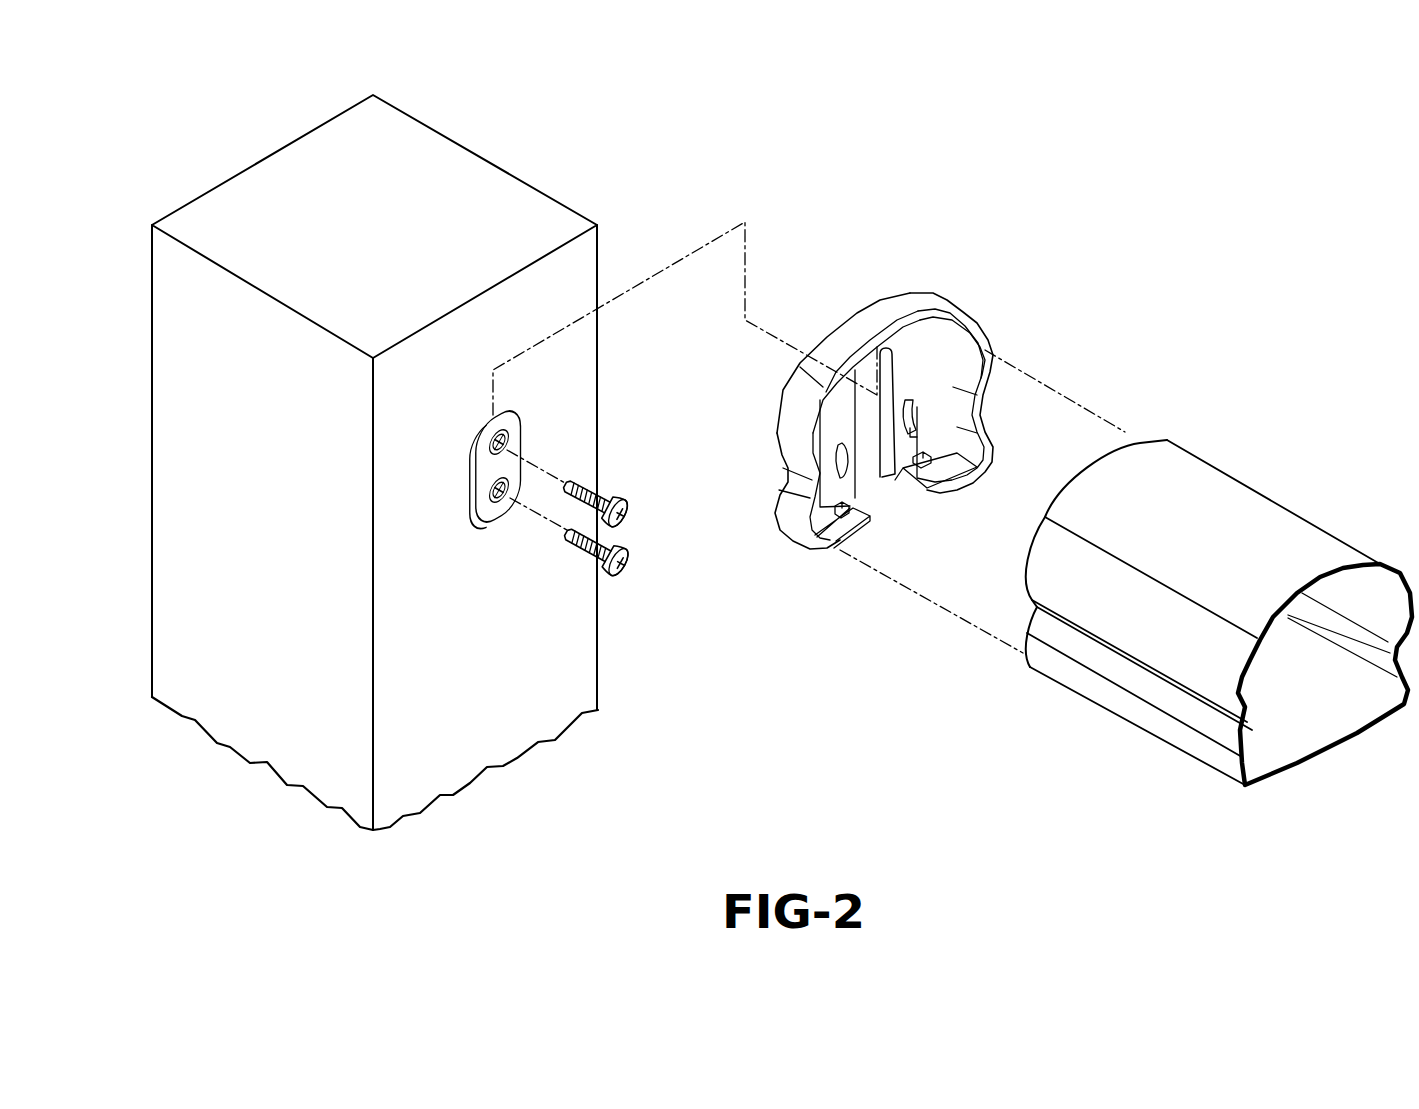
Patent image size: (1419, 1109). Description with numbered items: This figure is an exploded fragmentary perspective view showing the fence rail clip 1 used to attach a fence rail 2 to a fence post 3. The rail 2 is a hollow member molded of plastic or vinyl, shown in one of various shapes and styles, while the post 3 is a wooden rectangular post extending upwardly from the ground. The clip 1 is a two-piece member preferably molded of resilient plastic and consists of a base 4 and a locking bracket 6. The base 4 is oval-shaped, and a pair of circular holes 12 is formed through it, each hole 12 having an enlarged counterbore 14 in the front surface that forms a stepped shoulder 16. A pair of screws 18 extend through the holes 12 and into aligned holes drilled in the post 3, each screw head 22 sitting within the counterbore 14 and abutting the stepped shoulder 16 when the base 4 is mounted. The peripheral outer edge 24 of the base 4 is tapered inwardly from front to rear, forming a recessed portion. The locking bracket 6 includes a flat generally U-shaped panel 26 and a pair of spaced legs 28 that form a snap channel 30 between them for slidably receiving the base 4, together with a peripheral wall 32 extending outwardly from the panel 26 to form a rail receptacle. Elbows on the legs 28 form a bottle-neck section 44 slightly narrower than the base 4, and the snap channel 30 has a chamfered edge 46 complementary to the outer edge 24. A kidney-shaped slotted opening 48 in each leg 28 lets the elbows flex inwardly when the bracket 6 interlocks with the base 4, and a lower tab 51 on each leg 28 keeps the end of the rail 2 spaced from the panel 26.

The fence rail clip 1 is at (908, 413).
The fence rail 2 is at (1255, 517).
The fence post 3 is at (487, 177).
The base 4 is at (497, 492).
The locking bracket 6 is at (887, 413).
The circular holes 12 is at (499, 466).
The counterbore 14 is at (499, 442).
The stepped shoulder 16 is at (499, 490).
The screws 18 is at (612, 525).
The screw head 22 is at (637, 507).
The peripheral outer edge 24 is at (482, 430).
The U-shaped panel 26 is at (910, 340).
The legs 28 is at (837, 410).
The snap channel 30 is at (878, 472).
The peripheral wall 32 is at (872, 323).
The bottle-neck section 44 is at (870, 434).
The chamfered edge 46 is at (893, 365).
The kidney-shaped slotted opening 48 is at (907, 413).
The lower tab 51 is at (833, 507).